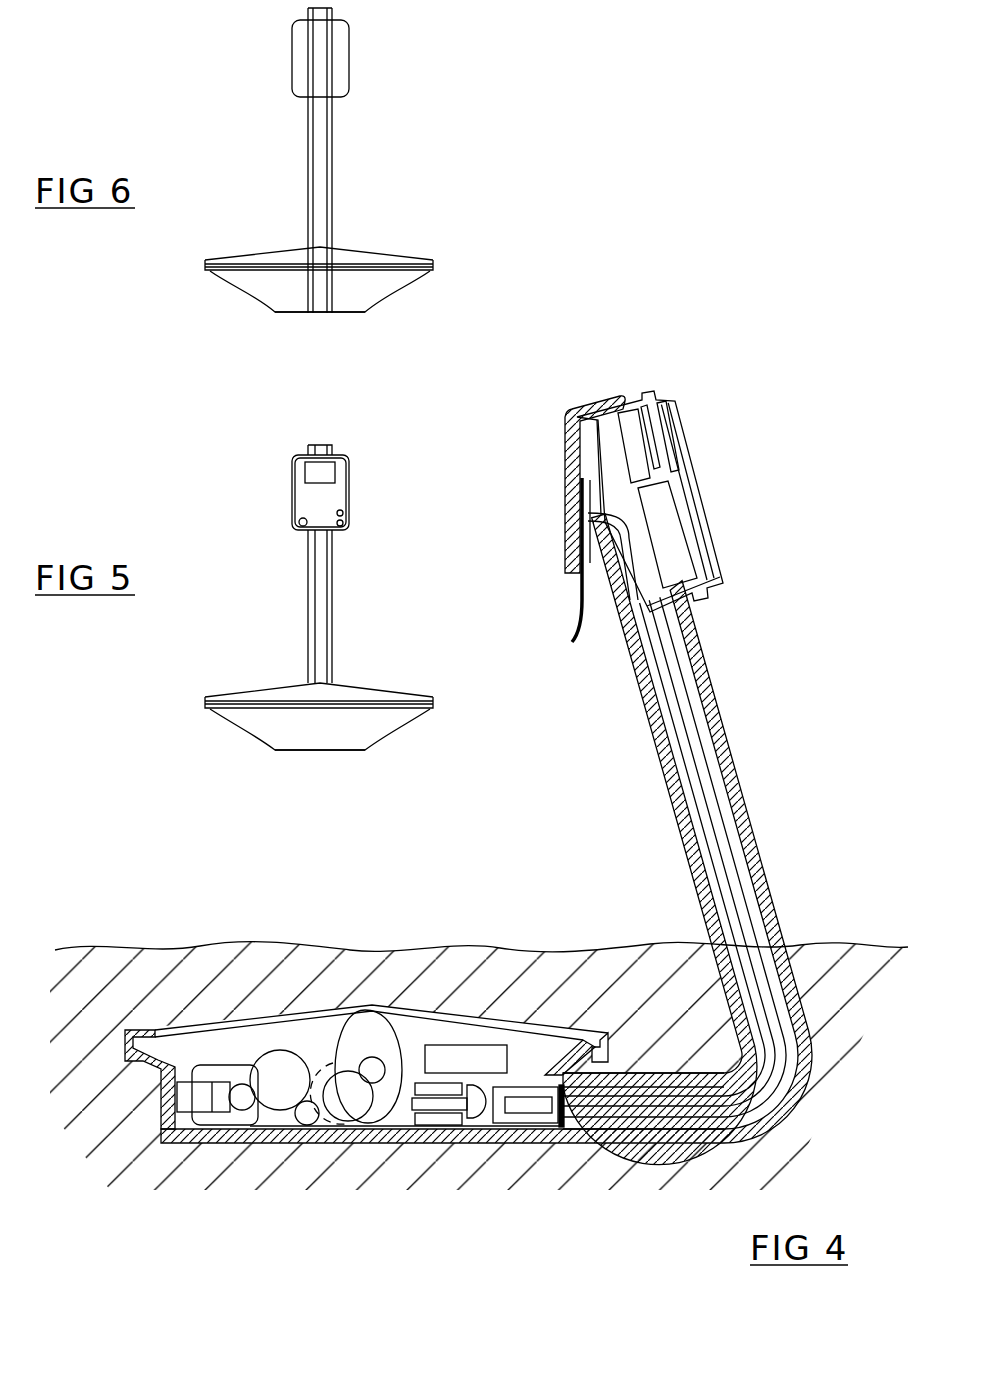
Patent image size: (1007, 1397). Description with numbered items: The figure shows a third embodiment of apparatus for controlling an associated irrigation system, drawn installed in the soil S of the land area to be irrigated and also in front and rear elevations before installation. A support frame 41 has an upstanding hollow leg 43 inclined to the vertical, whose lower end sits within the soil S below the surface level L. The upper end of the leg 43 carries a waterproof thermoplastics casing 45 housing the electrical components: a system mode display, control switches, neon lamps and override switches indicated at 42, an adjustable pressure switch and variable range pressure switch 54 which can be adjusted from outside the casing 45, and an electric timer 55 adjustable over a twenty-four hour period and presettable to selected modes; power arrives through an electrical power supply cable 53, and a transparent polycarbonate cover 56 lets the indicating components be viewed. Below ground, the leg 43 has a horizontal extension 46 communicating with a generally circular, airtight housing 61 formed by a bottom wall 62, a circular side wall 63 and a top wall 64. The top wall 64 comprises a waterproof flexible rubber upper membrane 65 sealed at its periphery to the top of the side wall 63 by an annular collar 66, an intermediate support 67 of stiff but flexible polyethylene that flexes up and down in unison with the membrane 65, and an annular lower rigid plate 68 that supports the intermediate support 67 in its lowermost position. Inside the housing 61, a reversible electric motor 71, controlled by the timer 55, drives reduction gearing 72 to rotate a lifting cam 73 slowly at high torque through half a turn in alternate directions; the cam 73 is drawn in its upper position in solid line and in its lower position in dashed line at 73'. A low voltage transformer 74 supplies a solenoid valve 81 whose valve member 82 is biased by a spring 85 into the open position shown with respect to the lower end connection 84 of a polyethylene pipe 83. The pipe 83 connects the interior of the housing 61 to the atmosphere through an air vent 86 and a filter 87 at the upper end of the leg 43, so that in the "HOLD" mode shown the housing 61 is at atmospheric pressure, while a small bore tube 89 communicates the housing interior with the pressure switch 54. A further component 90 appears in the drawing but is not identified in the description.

In FIG. 6, the support frame 41 is at (352, 150).
In FIG. 5, the support frame 41 is at (350, 562).
In FIG. 4, the support frame 41 is at (775, 795).
In FIG. 4, the system mode display, control switches and neon lamps 42 is at (675, 403).
In FIG. 6, the upstanding hollow leg 43 is at (312, 142).
In FIG. 5, the upstanding hollow leg 43 is at (328, 610).
In FIG. 4, the upstanding hollow leg 43 is at (707, 707).
In FIG. 6, the waterproof thermoplastics casing 45 is at (356, 68).
In FIG. 5, the waterproof thermoplastics casing 45 is at (292, 495).
In FIG. 4, the waterproof thermoplastics casing 45 is at (668, 380).
In FIG. 4, the horizontal extension 46 is at (640, 1145).
In FIG. 4, the electrical power supply cable 53 is at (580, 615).
In FIG. 4, the adjustable pressure switch 54 is at (663, 543).
In FIG. 4, the electric timer 55 is at (630, 438).
In FIG. 5, the transparent polycarbonate cover 56 is at (323, 473).
In FIG. 4, the transparent polycarbonate cover 56 is at (690, 467).
In FIG. 4, the airtight housing 61 is at (415, 1170).
In FIG. 6, the bottom wall 62 is at (350, 313).
In FIG. 5, the bottom wall 62 is at (313, 752).
In FIG. 4, the bottom wall 62 is at (330, 1107).
In FIG. 6, the circular side wall 63 is at (275, 293).
In FIG. 5, the circular side wall 63 is at (390, 720).
In FIG. 4, the circular side wall 63 is at (157, 1103).
In FIG. 6, the top wall 64 is at (383, 243).
In FIG. 5, the top wall 64 is at (250, 676).
In FIG. 4, the top wall 64 is at (185, 1008).
In FIG. 6, the upper membrane 65 is at (245, 255).
In FIG. 5, the upper membrane 65 is at (363, 687).
In FIG. 4, the upper membrane 65 is at (305, 1003).
In FIG. 4, the annular collar 66 is at (612, 1032).
In FIG. 4, the intermediate support 67 is at (248, 1005).
In FIG. 4, the lower rigid plate 68 is at (410, 1040).
In FIG. 4, the reversible electric motor 71 is at (207, 1122).
In FIG. 4, the reduction gearing 72 is at (283, 1102).
In FIG. 4, the lifting cam 73 is at (368, 1118).
In FIG. 4, the lower position of cam 73' is at (335, 1145).
In FIG. 4, the low voltage transformer 74 is at (455, 1058).
In FIG. 4, the solenoid valve 81 is at (527, 1115).
In FIG. 4, the valve member 82 is at (482, 1118).
In FIG. 4, the polyethylene pipe 83 is at (703, 822).
In FIG. 4, the lower end connection 84 is at (565, 1115).
In FIG. 4, the spring 85 is at (533, 1070).
In FIG. 4, the air vent 86 is at (588, 537).
In FIG. 4, the filter 87 is at (603, 578).
In FIG. 4, the small bore tube 89 is at (693, 730).
In FIG. 4, the switch 90 is at (260, 1120).
In FIG. 4, the soil S is at (52, 948).
In FIG. 4, the surface level L is at (865, 947).